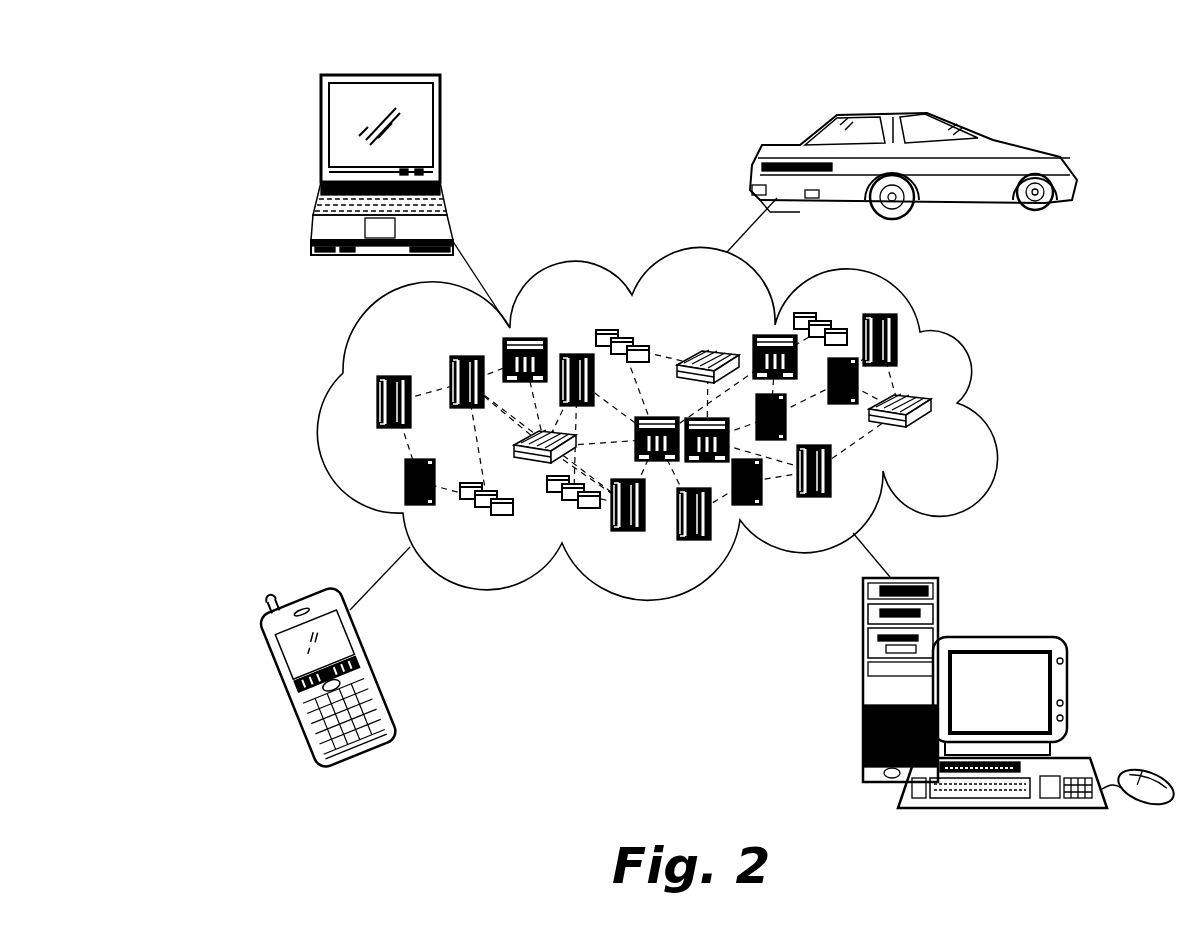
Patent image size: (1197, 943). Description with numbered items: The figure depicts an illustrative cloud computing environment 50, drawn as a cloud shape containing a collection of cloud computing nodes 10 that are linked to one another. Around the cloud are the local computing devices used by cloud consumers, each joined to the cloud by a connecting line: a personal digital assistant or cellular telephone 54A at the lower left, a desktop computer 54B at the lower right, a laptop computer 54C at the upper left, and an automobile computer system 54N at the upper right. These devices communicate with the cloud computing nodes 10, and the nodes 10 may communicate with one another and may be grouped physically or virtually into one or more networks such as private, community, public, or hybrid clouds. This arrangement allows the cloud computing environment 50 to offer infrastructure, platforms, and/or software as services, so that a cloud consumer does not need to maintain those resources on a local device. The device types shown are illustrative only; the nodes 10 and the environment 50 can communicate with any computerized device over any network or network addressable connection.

The cloud computing nodes 10 is at (950, 457).
The cloud computing environment 50 is at (963, 342).
The personal digital assistant (PDA) or cellular telephone 54A is at (275, 679).
The desktop computer 54B is at (1016, 637).
The laptop computer 54C is at (344, 76).
The automobile computer system 54N is at (973, 130).